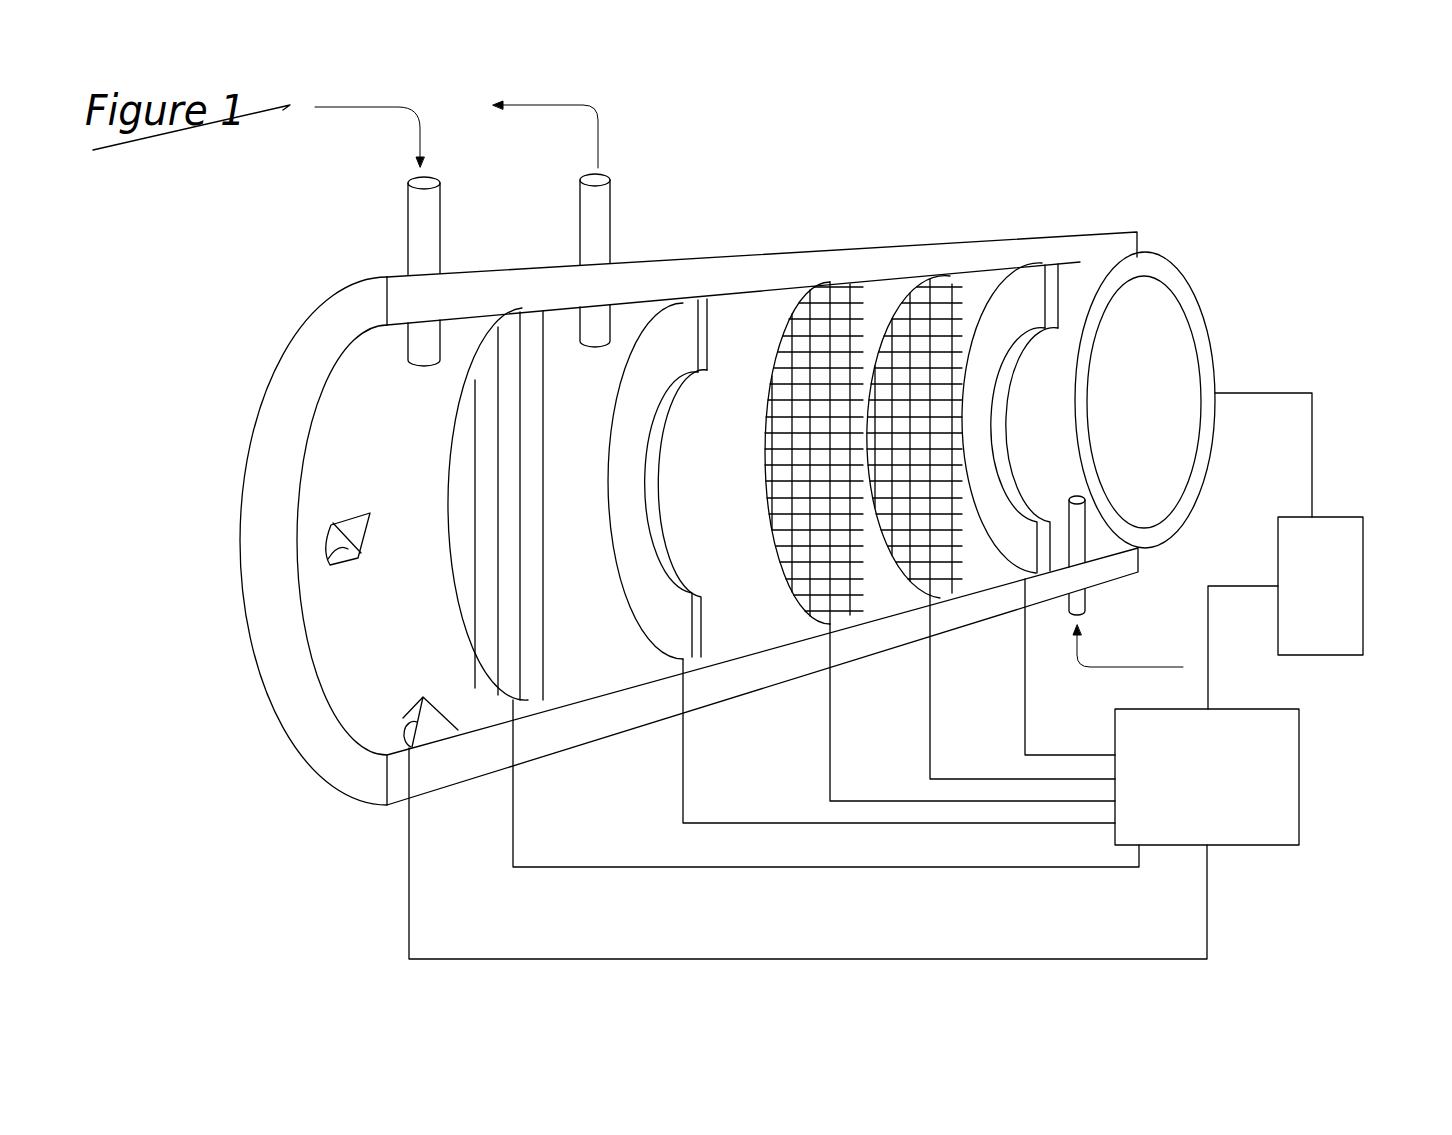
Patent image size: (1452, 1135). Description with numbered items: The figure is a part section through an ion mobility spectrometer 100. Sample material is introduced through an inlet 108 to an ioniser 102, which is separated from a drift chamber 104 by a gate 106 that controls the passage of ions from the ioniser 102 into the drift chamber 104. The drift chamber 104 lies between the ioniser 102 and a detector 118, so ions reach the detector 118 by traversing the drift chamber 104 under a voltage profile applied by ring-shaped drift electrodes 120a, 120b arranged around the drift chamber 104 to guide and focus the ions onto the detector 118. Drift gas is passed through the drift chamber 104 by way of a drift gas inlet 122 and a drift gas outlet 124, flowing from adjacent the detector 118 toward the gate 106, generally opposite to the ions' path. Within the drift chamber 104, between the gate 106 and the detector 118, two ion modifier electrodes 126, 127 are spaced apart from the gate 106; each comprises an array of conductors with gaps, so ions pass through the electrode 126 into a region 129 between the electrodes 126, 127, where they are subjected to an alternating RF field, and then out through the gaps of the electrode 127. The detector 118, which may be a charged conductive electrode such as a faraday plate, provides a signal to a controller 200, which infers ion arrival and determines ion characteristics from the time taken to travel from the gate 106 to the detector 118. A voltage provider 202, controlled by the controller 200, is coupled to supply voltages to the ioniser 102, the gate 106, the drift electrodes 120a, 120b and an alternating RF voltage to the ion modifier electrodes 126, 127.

The ion mobility spectrometer 100 is at (897, 217).
The ioniser 102 is at (327, 560).
The drift chamber 104 is at (756, 624).
The gate 106 is at (513, 328).
The inlet 108 is at (412, 217).
The detector 118 is at (1183, 283).
The first drift electrode 120a is at (695, 300).
The second drift electrode 120b is at (1037, 277).
The drift gas inlet 122 is at (1085, 600).
The drift gas outlet 124 is at (602, 192).
The first ion modifier electrode 126 is at (835, 277).
The second ion modifier electrode 127 is at (948, 280).
The region between the ion modifier electrodes 129 is at (896, 605).
The controller 200 is at (1350, 552).
The voltage provider 202 is at (1207, 777).